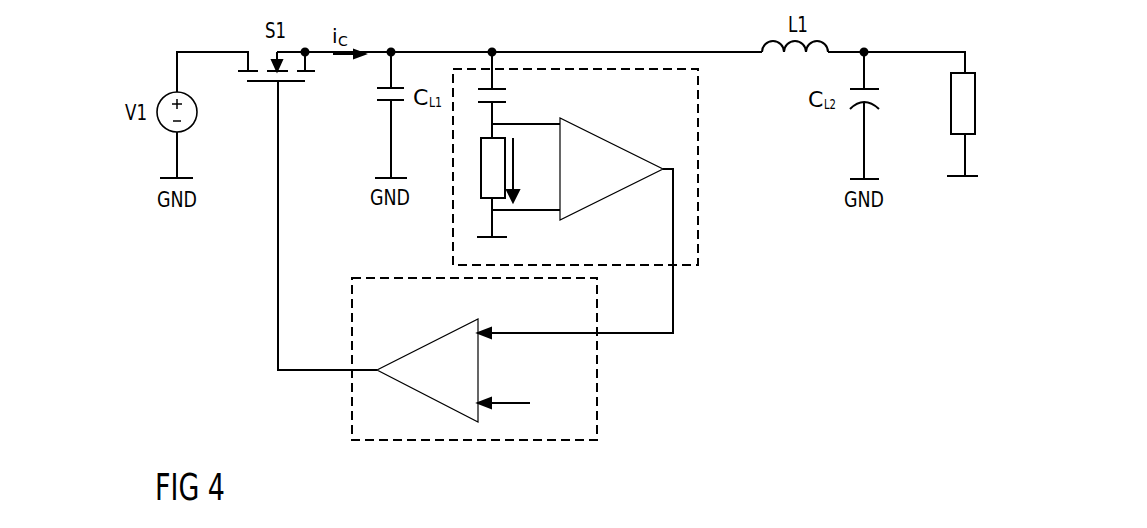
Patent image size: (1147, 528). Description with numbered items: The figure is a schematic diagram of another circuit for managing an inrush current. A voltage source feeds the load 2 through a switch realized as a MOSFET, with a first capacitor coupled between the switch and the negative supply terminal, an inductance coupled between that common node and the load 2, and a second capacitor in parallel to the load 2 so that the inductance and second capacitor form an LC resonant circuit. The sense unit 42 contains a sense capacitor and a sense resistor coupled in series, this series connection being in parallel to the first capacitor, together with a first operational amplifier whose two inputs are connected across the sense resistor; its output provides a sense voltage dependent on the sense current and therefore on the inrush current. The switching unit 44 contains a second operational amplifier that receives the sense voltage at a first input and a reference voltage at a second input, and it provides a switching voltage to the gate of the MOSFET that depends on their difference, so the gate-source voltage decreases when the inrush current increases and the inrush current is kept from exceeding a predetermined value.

The load 2 is at (957, 142).
The sense unit 42 is at (587, 195).
The switching unit 44 is at (478, 359).